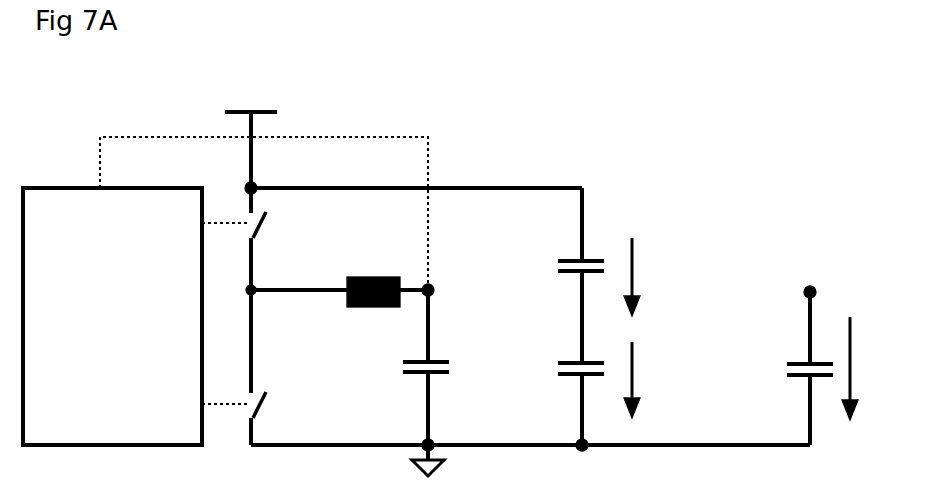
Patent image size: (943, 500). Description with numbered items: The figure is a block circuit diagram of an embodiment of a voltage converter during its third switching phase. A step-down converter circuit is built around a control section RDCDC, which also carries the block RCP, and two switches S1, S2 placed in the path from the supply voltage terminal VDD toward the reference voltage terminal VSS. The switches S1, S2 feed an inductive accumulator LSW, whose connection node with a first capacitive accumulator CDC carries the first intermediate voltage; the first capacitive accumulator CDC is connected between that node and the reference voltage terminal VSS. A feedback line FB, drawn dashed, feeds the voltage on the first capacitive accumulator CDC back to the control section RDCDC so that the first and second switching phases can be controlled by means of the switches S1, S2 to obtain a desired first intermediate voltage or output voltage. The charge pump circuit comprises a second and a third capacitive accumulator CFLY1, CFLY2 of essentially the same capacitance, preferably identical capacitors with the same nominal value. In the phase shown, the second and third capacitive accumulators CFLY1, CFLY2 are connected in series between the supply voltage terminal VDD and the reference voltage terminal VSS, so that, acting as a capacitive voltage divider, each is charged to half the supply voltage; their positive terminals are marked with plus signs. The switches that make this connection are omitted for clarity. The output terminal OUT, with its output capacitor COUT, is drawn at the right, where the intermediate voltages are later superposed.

The control section RDCDC is at (112, 316).
The regulated charge pump block RCP is at (101, 326).
The supply voltage terminal VDD is at (248, 109).
The feedback line FB is at (430, 173).
The switch S1 is at (255, 230).
The switch S2 is at (258, 407).
The inductive accumulator LSW is at (366, 277).
The first capacitive accumulator CDC is at (441, 360).
The reference voltage terminal VSS is at (444, 463).
The second capacitive accumulator CFLY1 is at (567, 258).
The third capacitive accumulator CFLY2 is at (567, 377).
The output terminal OUT is at (807, 287).
The output capacitor COUT is at (795, 378).